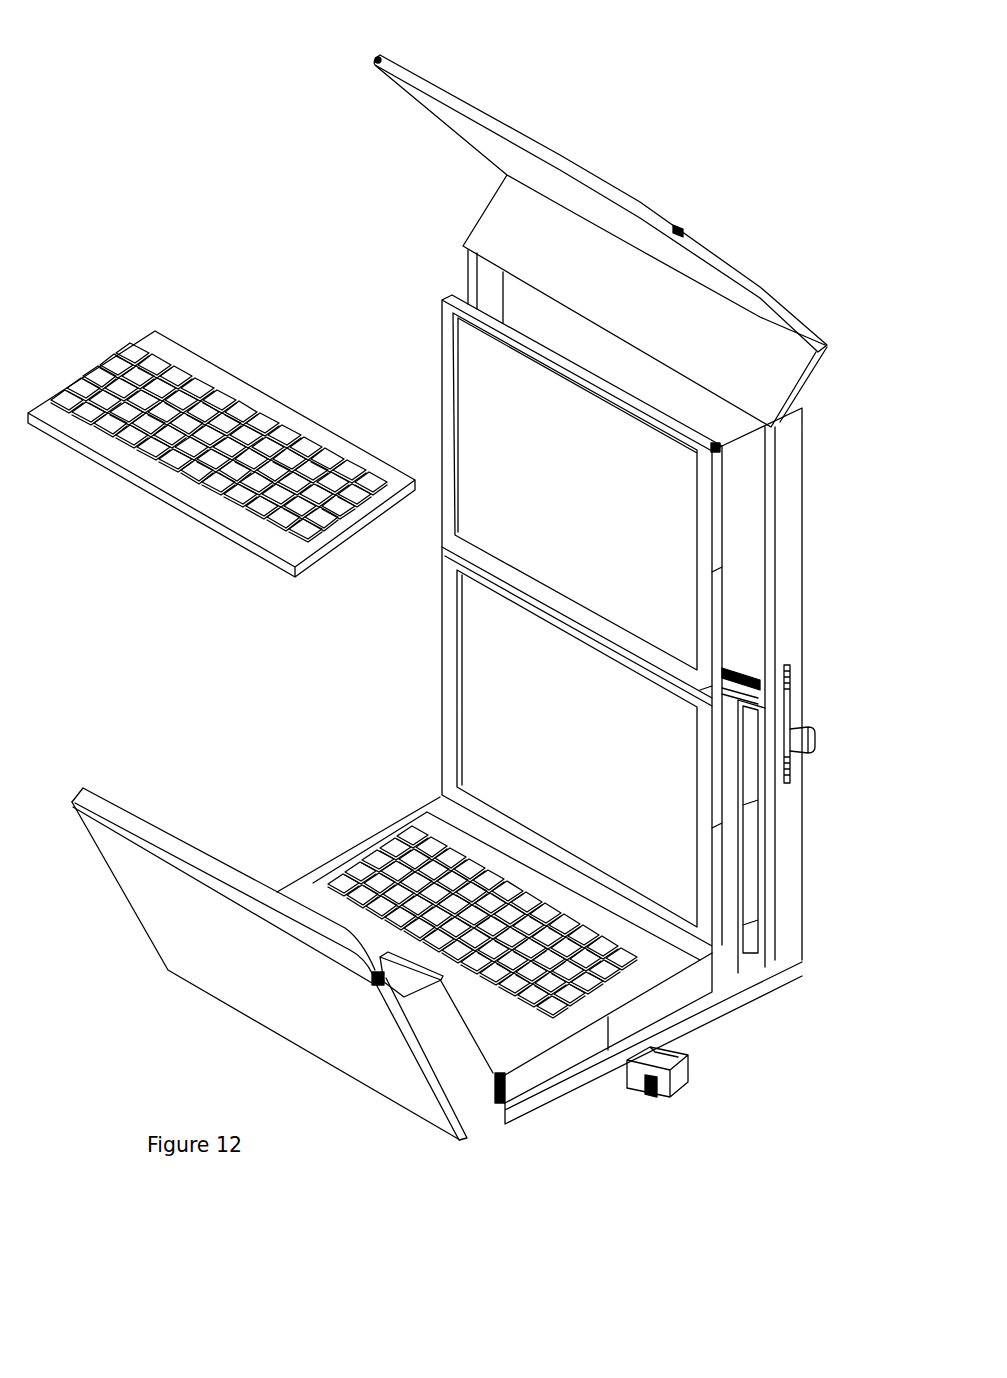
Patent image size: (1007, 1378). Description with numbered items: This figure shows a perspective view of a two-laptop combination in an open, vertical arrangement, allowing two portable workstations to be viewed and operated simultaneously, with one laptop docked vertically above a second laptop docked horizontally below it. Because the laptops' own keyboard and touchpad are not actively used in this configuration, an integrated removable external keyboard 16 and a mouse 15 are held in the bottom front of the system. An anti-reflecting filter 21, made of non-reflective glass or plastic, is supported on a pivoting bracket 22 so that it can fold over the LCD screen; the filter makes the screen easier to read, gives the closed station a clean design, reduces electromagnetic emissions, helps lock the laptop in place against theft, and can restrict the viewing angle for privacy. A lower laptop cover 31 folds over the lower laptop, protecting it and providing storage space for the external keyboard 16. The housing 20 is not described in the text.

The mouse 15 is at (655, 1096).
The integrated removable external keyboard 16 is at (130, 350).
The housing / main unit 20 is at (755, 513).
The anti-reflecting filter 21 is at (373, 57).
The pivoting bracket 22 is at (453, 258).
The lower laptop cover 31 is at (93, 787).